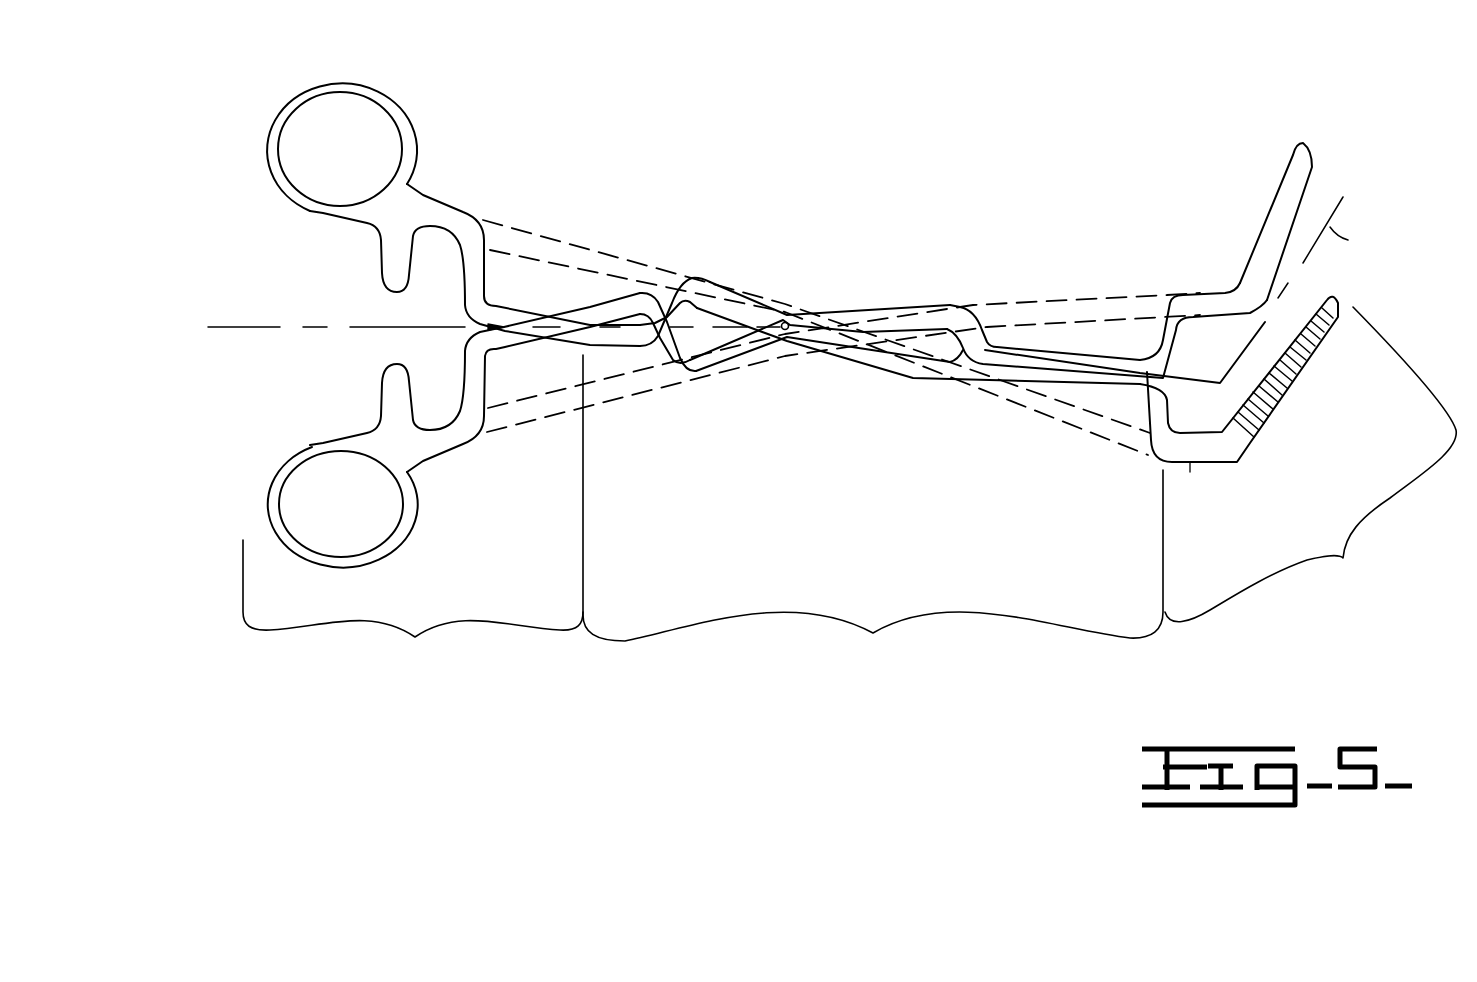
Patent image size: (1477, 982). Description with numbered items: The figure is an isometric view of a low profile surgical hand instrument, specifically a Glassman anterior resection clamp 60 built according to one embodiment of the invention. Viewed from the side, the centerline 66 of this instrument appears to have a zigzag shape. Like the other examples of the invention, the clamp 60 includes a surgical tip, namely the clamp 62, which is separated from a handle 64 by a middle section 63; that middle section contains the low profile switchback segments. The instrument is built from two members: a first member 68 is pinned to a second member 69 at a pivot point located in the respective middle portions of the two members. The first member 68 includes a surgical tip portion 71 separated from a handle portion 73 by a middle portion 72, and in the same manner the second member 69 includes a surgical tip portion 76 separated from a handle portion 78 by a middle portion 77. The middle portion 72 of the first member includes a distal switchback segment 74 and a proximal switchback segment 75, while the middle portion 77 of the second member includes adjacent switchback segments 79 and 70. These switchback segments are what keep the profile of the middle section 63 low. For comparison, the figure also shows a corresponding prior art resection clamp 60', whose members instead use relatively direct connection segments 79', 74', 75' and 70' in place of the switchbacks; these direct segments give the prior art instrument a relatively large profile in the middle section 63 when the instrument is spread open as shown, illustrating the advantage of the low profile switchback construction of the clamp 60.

The Glassman anterior resection clamp 60 is at (883, 217).
The corresponding resection clamp 60' is at (841, 278).
The surgical tip (clamp) 62 is at (1310, 464).
The middle section 63 is at (873, 510).
The handle 64 is at (413, 605).
The centerline 66 is at (317, 327).
The first member 68 is at (781, 320).
The second member 69 is at (1203, 290).
The switchback segment 70 is at (679, 276).
The direct connection segment 70' is at (666, 446).
The surgical tip portion 71 is at (1338, 293).
The middle portion 72 is at (886, 330).
The handle portion 73 is at (327, 82).
The distal switchback segment 74 is at (1039, 271).
The direct connection segment 74' is at (987, 446).
The proximal switchback segment 75 is at (678, 370).
The direct connection segment 75' is at (665, 207).
The surgical tip portion 76 is at (1306, 140).
The middle portion 77 is at (886, 330).
The handle portion 78 is at (327, 440).
The switchback segment 79 is at (1016, 444).
The direct connection segment 79' is at (1006, 259).